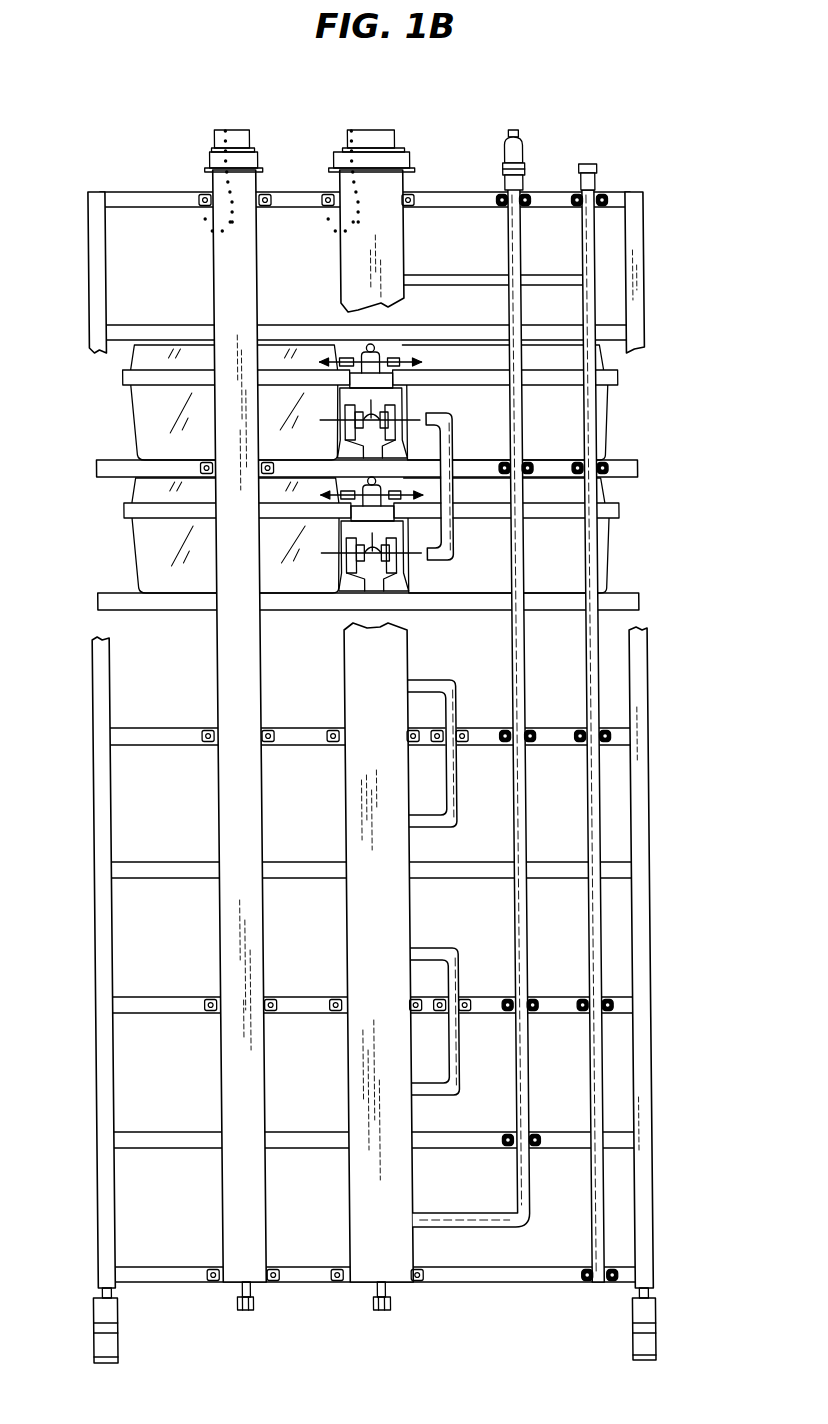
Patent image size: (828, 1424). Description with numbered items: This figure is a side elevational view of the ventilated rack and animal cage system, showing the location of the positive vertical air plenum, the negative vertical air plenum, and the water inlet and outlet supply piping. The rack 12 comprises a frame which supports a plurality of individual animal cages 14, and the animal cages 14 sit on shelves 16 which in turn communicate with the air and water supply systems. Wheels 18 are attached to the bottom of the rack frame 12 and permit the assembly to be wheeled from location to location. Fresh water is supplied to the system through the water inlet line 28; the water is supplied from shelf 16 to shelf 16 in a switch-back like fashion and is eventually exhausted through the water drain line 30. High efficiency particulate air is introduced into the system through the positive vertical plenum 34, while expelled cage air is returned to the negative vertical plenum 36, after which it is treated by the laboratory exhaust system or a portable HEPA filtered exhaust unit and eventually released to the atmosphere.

The rack 12 is at (643, 656).
The animal cages 14 is at (636, 408).
The shelves 16 is at (628, 463).
The wheels 18 is at (83, 1310).
The water inlet line 28 is at (520, 170).
The water drain line 30 is at (597, 170).
The positive vertical plenum 34 is at (243, 200).
The negative vertical plenum 36 is at (387, 223).